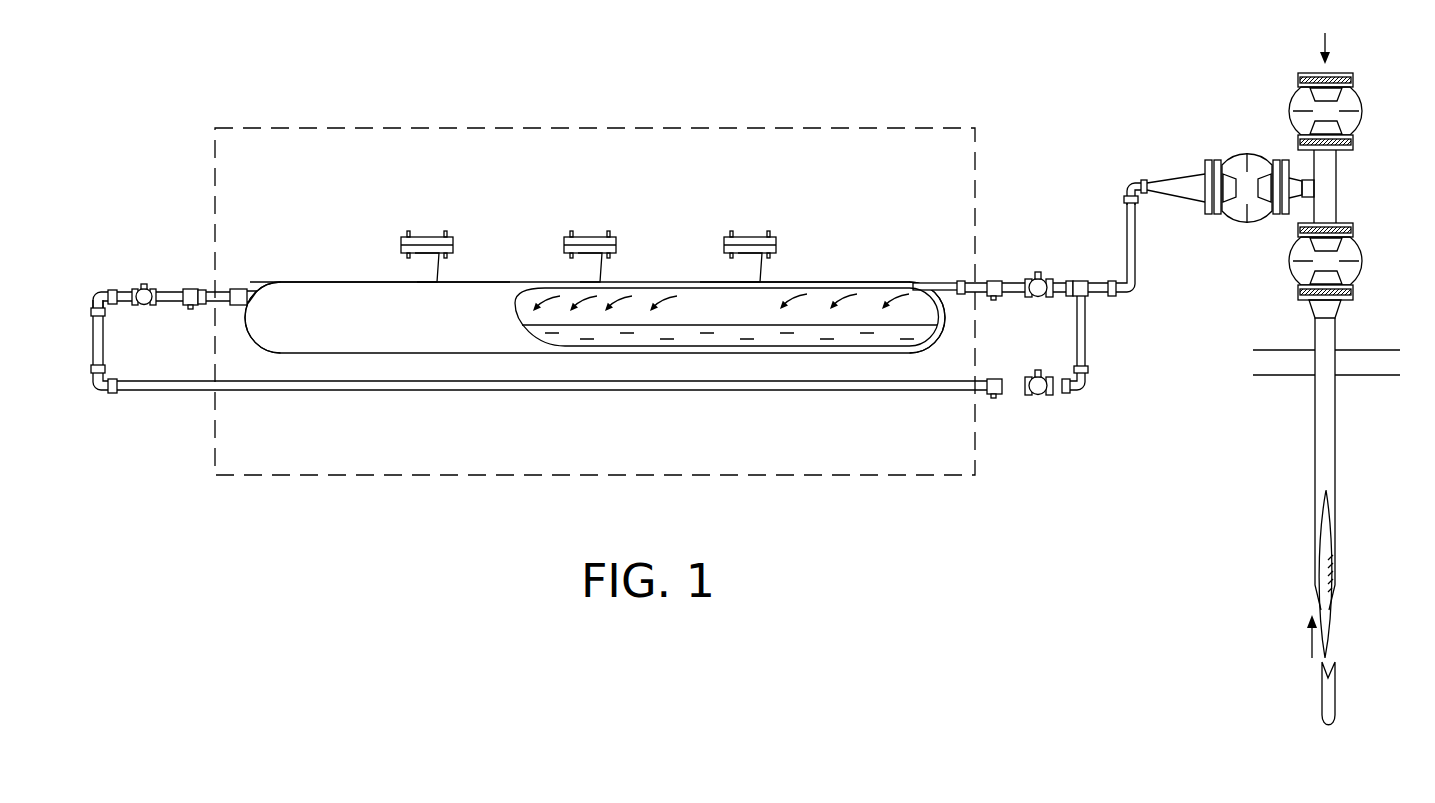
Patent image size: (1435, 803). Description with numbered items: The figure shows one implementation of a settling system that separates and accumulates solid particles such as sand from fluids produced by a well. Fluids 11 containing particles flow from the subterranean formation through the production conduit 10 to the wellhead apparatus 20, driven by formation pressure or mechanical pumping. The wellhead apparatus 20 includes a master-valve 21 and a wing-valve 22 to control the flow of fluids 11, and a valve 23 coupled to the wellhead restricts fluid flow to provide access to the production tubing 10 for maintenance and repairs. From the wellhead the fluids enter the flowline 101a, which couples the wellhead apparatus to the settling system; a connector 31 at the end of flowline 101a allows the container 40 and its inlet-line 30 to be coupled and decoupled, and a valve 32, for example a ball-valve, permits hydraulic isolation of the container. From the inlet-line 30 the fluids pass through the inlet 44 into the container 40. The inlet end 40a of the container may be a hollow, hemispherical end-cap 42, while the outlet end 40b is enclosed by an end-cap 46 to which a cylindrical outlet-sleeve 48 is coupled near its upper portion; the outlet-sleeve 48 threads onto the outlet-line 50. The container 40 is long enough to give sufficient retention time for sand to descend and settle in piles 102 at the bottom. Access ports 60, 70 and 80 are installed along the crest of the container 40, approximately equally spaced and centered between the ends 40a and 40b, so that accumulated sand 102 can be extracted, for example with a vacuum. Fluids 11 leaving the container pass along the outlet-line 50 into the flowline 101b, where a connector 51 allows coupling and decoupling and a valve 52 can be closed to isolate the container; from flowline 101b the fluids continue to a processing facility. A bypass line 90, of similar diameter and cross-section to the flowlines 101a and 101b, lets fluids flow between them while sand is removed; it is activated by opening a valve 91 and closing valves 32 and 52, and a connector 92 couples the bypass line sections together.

The production conduit 10 is at (1336, 717).
The fluids 11 is at (1329, 648).
The wellhead apparatus 20 is at (1311, 29).
The master-valve 21 is at (1357, 268).
The wing-valve 22 is at (1247, 175).
The valve 23 is at (1357, 110).
The inlet-line 30 is at (963, 283).
The connector 31 is at (993, 281).
The valve 32 is at (1040, 279).
The container 40 is at (478, 282).
The inlet end 40a is at (864, 282).
The outlet end 40b is at (357, 282).
The end-cap 42 is at (915, 283).
The inlet 44 is at (940, 283).
The end-cap 46 is at (273, 282).
The outlet-sleeve 48 is at (235, 289).
The outlet-line 50 is at (203, 289).
The connector 51 is at (183, 290).
The valve 52 is at (137, 304).
The access port 60 is at (750, 236).
The access port 70 is at (595, 236).
The access port 80 is at (430, 236).
The bypass line 90 is at (1087, 325).
The valve 91 is at (1040, 394).
The connector 92 is at (993, 395).
The flowline 101a is at (1124, 215).
The flowline 101b is at (93, 327).
The piles of sand 102 is at (762, 324).